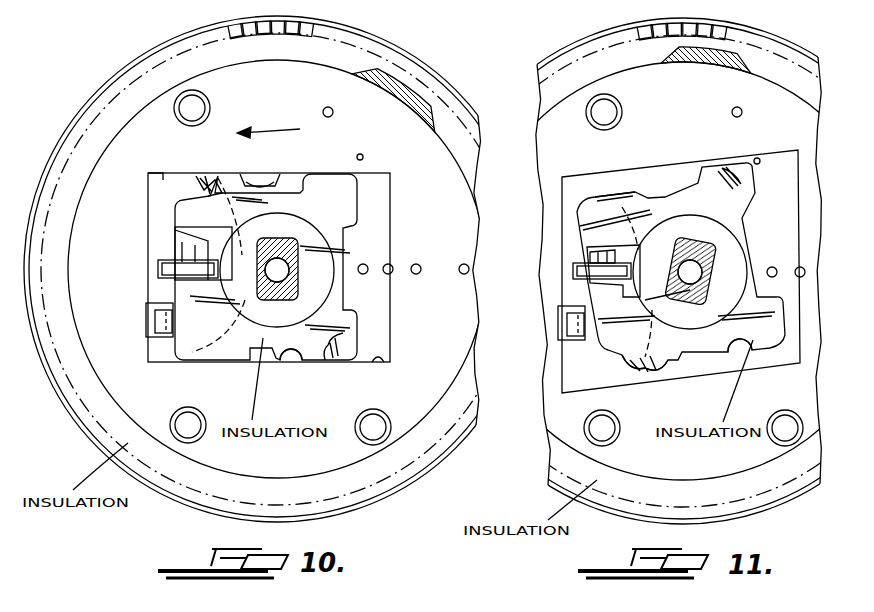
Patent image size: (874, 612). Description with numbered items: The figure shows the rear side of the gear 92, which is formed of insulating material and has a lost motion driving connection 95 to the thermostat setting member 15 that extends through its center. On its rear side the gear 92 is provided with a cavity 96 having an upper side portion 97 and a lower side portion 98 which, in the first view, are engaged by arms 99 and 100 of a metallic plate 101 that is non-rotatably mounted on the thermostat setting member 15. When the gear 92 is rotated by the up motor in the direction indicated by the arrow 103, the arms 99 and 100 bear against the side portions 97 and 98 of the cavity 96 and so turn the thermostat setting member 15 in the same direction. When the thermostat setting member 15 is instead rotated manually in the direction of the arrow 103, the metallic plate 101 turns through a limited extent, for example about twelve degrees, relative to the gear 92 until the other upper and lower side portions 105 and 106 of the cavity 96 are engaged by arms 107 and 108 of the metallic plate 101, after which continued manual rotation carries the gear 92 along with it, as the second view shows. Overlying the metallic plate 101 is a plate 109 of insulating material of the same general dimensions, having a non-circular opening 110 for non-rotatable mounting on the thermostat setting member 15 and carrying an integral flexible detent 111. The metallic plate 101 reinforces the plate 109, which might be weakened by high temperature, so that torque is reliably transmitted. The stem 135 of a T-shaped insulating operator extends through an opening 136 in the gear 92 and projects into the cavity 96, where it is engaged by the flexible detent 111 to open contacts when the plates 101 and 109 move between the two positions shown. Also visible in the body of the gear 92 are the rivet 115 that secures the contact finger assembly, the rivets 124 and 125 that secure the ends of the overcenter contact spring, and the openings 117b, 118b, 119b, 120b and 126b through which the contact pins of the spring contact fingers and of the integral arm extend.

In FIG. 10, the gear 92 is at (368, 45).
In FIG. 11, the gear 92 is at (758, 52).
In FIG. 10, the lost motion driving connection 95 is at (290, 368).
In FIG. 11, the lost motion driving connection 95 is at (706, 380).
In FIG. 10, the cavity 96 is at (390, 167).
In FIG. 11, the cavity 96 is at (790, 150).
In FIG. 10, the upper side portion 97 is at (160, 175).
In FIG. 10, the lower side portion 98 is at (390, 366).
In FIG. 10, the arm 99 is at (214, 178).
In FIG. 10, the arm 100 is at (333, 361).
In FIG. 10, the metallic plate 101 is at (225, 352).
In FIG. 11, the metallic plate 101 is at (662, 203).
In FIG. 10, the arrow 103 is at (300, 129).
In FIG. 10, the upper side portion 105 is at (361, 156).
In FIG. 11, the upper side portion 105 is at (757, 158).
In FIG. 10, the lower side portion 106 is at (182, 382).
In FIG. 11, the lower side portion 106 is at (592, 385).
In FIG. 11, the arm 107 is at (727, 170).
In FIG. 11, the arm 108 is at (652, 374).
In FIG. 10, the plate of insulating material 109 is at (276, 190).
In FIG. 11, the plate of insulating material 109 is at (624, 198).
In FIG. 10, the non-circular opening 110 is at (296, 258).
In FIG. 11, the non-circular opening 110 is at (715, 261).
In FIG. 10, the flexible detent 111 is at (178, 232).
In FIG. 11, the flexible detent 111 is at (590, 273).
In FIG. 10, the rivet 115 is at (380, 418).
In FIG. 11, the rivet 115 is at (785, 418).
In FIG. 10, the opening 117b is at (367, 267).
In FIG. 11, the opening 117b is at (772, 267).
In FIG. 10, the opening 118b is at (388, 275).
In FIG. 11, the opening 118b is at (799, 267).
In FIG. 10, the opening 119b is at (420, 264).
In FIG. 10, the opening 120b is at (462, 276).
In FIG. 10, the rivet 124 is at (188, 428).
In FIG. 11, the rivet 124 is at (602, 431).
In FIG. 10, the rivet 125 is at (198, 106).
In FIG. 11, the rivet 125 is at (612, 112).
In FIG. 10, the opening 126b is at (328, 107).
In FIG. 11, the opening 126b is at (737, 107).
In FIG. 10, the stem 135 is at (160, 270).
In FIG. 11, the stem 135 is at (578, 276).
In FIG. 10, the opening 136 is at (165, 262).
In FIG. 11, the opening 136 is at (580, 263).
In FIG. 10, the thermostat setting member 15 is at (290, 240).
In FIG. 11, the thermostat setting member 15 is at (700, 245).